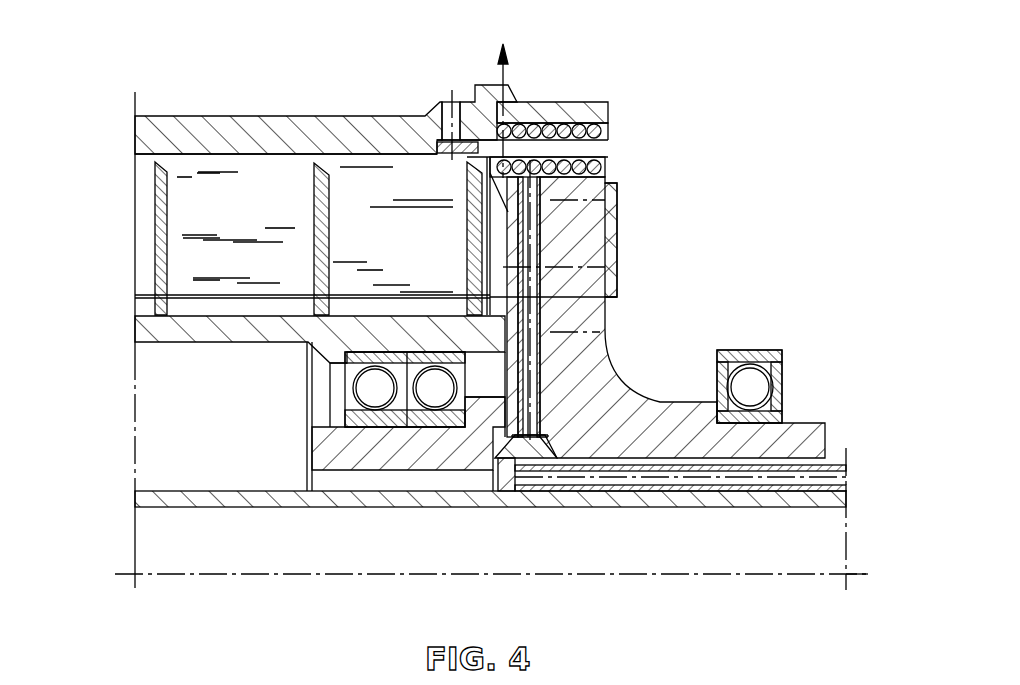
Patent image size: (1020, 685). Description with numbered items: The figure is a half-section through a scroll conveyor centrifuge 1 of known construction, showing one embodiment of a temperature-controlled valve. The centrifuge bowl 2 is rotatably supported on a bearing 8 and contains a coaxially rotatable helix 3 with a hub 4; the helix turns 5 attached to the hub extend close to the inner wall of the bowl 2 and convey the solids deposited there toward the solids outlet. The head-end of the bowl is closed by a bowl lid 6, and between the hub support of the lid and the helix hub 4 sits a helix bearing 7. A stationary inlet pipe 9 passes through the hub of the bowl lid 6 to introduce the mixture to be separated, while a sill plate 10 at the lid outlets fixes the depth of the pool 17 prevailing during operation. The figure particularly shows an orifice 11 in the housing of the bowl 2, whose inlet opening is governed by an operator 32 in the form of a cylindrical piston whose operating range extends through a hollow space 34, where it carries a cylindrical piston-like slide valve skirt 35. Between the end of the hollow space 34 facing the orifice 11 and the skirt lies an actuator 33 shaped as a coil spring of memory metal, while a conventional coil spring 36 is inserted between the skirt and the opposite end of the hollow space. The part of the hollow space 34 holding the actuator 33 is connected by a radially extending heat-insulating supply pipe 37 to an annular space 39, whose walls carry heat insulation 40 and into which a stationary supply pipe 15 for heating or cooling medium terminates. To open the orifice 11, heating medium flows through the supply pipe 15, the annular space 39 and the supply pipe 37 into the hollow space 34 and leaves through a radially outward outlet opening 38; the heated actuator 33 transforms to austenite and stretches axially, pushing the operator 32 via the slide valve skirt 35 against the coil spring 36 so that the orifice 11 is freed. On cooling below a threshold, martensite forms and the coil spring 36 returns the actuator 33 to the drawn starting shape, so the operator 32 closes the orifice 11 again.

The scroll conveyor centrifuge 1 is at (728, 233).
The centrifuge bowl 2 is at (248, 130).
The helix 3 is at (150, 210).
The hub 4 is at (155, 327).
The helix turns 5 is at (162, 260).
The bowl lid 6 is at (593, 387).
The helix bearing 7 is at (352, 365).
The bearing 8 is at (752, 378).
The inlet pipe 9 is at (820, 497).
The sill plate 10 is at (611, 240).
The orifice 11 is at (448, 112).
The supply pipe 15 is at (833, 470).
The pool 17 is at (400, 247).
The operator 32 is at (472, 135).
The actuator 33 is at (520, 133).
The hollow space 34 is at (580, 168).
The slide valve skirt 35 is at (550, 140).
The coil spring 36 is at (580, 130).
The supply pipe 37 is at (537, 313).
The outlet opening 38 is at (505, 90).
The annular space 39 is at (517, 455).
The heat insulation 40 is at (498, 455).